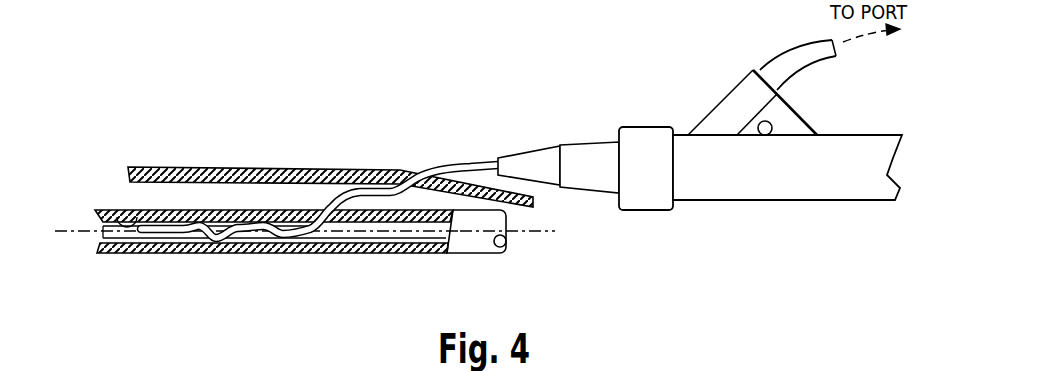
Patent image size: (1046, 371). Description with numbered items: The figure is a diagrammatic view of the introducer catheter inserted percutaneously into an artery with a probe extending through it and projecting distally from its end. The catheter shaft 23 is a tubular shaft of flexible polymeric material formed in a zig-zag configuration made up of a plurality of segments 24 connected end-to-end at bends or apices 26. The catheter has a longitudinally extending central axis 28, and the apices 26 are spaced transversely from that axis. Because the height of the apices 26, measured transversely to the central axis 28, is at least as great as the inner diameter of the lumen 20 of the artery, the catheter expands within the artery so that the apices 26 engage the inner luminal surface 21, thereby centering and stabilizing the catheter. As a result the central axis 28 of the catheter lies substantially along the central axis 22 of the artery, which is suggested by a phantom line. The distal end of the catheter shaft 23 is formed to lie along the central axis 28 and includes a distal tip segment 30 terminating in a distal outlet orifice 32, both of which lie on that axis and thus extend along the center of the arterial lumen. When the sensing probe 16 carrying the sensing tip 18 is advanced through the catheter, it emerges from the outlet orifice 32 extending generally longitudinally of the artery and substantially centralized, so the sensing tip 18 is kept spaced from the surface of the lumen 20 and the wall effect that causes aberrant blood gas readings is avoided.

The sensing probe 16 is at (178, 215).
The sensing tip 18 is at (132, 254).
The lumen of the artery 20 is at (388, 237).
The inner luminal surface 21 is at (135, 217).
The central axis of the artery 22 is at (88, 229).
The catheter shaft 23 is at (457, 164).
The segments 24 is at (328, 210).
The apices 26 is at (230, 210).
The central axis of the catheter 28 is at (528, 235).
The distal tip segment 30 is at (178, 254).
The distal outlet orifice 32 is at (165, 254).